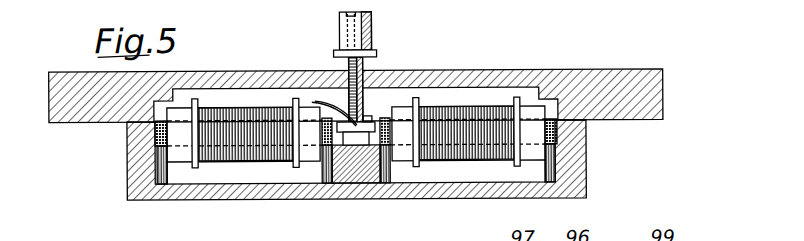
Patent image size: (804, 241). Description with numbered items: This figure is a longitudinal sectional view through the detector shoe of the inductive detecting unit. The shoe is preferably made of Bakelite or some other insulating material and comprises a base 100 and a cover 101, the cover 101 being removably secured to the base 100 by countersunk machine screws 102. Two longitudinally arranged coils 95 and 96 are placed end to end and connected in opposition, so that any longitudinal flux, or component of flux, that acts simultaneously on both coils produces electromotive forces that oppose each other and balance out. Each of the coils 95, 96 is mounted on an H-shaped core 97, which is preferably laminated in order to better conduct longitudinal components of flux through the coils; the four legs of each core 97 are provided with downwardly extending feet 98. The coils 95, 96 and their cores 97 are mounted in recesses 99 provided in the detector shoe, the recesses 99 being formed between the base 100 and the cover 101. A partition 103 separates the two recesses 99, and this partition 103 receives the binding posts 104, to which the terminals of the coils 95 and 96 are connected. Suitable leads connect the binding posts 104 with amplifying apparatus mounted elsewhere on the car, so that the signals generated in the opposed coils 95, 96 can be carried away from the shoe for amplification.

The coil 95 is at (246, 107).
The coil 96 is at (472, 107).
The H-shaped core 97 is at (307, 112).
The feet 98 is at (166, 176).
The recesses 99 is at (262, 176).
The base 100 is at (588, 176).
The cover 101 is at (613, 70).
The countersunk machine screws 102 is at (571, 78).
The partition 103 is at (371, 178).
The binding posts 104 is at (373, 31).